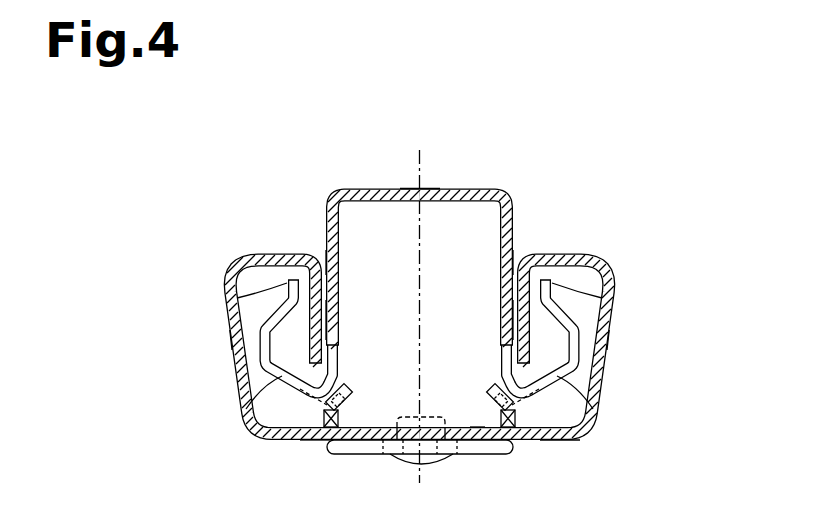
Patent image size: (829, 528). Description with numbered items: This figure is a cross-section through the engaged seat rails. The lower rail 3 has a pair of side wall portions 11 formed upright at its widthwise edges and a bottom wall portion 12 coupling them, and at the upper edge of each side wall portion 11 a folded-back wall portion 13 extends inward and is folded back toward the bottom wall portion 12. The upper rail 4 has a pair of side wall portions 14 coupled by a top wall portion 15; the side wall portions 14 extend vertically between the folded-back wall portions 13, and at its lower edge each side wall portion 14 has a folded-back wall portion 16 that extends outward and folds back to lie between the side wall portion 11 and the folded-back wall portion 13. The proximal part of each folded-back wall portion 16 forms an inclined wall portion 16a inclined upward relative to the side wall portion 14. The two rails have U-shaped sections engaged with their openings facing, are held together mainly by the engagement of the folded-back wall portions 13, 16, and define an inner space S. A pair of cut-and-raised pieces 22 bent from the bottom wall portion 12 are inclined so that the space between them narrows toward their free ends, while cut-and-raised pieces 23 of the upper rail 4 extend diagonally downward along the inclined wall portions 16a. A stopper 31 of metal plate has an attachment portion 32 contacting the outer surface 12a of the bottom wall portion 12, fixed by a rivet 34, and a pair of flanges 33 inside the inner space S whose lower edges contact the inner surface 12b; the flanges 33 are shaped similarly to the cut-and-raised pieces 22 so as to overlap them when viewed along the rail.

The lower rail 3 is at (601, 258).
The upper rail 4 is at (507, 192).
The side wall portion 11 is at (231, 350).
The bottom wall portion 12 is at (497, 456).
The outer surface 12a is at (457, 453).
The inner surface 12b is at (478, 427).
The folded-back wall portion 13 is at (343, 301).
The side wall portion 14 is at (341, 262).
The top wall portion 15 is at (457, 191).
The folded-back wall portion 16 is at (225, 299).
The inclined wall portion 16a is at (244, 404).
The cut-and-raised piece 22 is at (563, 441).
The cut-and-raised piece 23 is at (352, 404).
The stopper 31 is at (329, 448).
The attachment portion 32 is at (352, 455).
The flange 33 is at (348, 388).
The rivet 34 is at (410, 464).
The inner space S is at (369, 340).